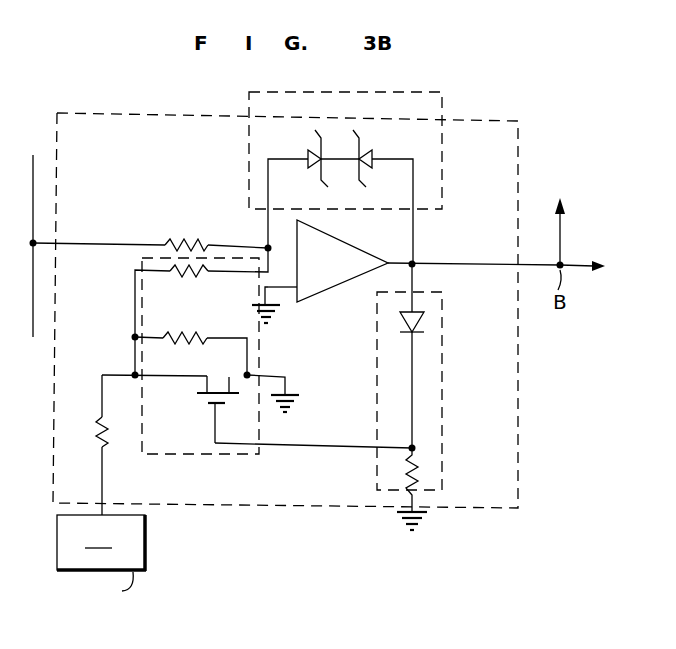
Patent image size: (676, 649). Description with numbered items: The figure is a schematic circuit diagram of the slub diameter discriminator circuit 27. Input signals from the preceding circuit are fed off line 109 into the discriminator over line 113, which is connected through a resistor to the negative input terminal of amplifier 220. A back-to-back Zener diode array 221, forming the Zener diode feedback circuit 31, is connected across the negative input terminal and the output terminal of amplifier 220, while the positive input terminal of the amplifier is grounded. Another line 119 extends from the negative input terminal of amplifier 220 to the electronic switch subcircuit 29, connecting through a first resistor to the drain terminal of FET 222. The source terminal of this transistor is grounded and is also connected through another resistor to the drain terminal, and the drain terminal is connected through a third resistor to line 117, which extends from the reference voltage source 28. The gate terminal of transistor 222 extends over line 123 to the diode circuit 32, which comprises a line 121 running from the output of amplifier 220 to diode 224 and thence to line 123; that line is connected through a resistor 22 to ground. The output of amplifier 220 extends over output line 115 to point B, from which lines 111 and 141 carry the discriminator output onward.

The first yarn diameter discriminator circuit 27 is at (518, 130).
The back-to-back Zener diode feedback circuit 31 is at (442, 101).
The electronic switch 29 is at (258, 347).
The diode circuit 32 is at (443, 379).
The source of reference voltage 28 is at (103, 568).
The resistor 22 is at (420, 470).
The line 109 is at (33, 176).
The line 111 is at (560, 238).
The line 113 is at (63, 243).
The output line 115 is at (467, 263).
The line 117 is at (102, 484).
The line 119 is at (270, 250).
The line 121 is at (412, 278).
The line 123 is at (288, 446).
The line 141 is at (578, 268).
The amplifier 220 is at (352, 268).
The back-to-back Zener diode array 221 is at (350, 188).
The FET 222 is at (198, 398).
The diode 224 is at (405, 332).